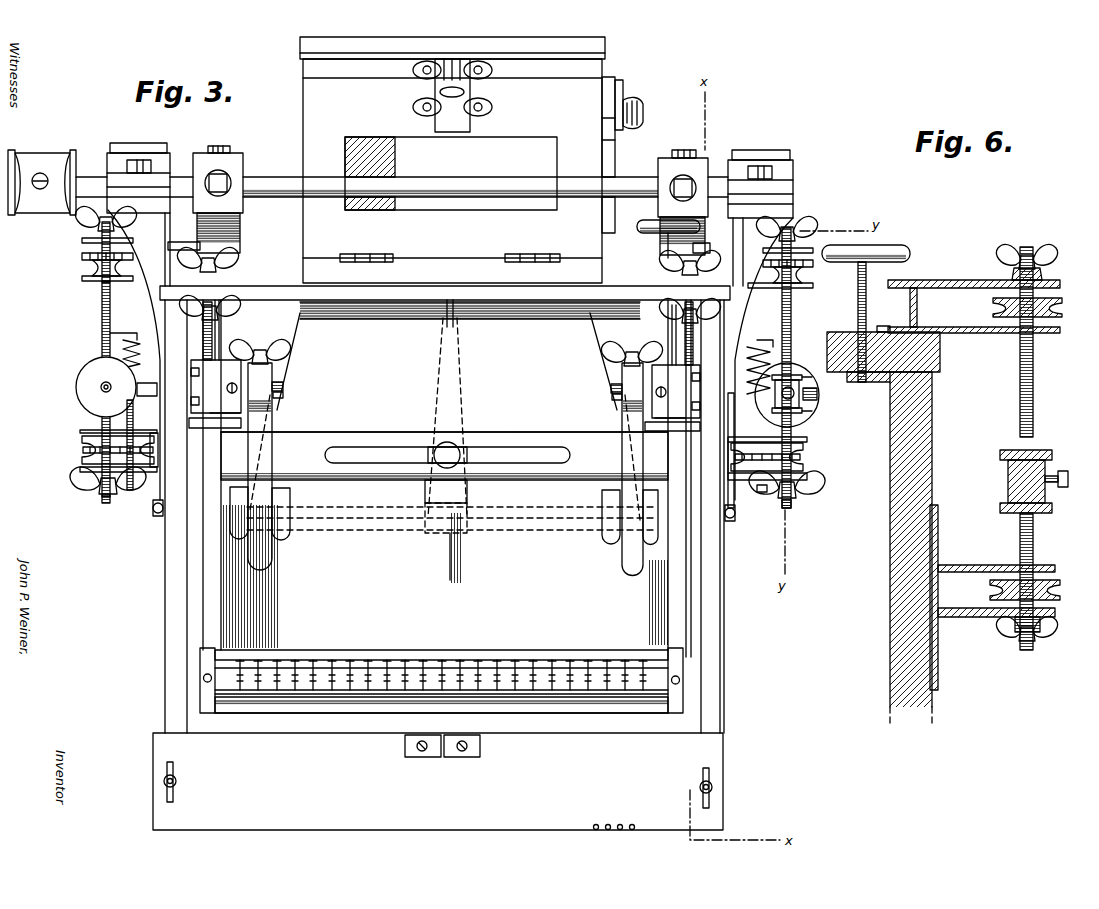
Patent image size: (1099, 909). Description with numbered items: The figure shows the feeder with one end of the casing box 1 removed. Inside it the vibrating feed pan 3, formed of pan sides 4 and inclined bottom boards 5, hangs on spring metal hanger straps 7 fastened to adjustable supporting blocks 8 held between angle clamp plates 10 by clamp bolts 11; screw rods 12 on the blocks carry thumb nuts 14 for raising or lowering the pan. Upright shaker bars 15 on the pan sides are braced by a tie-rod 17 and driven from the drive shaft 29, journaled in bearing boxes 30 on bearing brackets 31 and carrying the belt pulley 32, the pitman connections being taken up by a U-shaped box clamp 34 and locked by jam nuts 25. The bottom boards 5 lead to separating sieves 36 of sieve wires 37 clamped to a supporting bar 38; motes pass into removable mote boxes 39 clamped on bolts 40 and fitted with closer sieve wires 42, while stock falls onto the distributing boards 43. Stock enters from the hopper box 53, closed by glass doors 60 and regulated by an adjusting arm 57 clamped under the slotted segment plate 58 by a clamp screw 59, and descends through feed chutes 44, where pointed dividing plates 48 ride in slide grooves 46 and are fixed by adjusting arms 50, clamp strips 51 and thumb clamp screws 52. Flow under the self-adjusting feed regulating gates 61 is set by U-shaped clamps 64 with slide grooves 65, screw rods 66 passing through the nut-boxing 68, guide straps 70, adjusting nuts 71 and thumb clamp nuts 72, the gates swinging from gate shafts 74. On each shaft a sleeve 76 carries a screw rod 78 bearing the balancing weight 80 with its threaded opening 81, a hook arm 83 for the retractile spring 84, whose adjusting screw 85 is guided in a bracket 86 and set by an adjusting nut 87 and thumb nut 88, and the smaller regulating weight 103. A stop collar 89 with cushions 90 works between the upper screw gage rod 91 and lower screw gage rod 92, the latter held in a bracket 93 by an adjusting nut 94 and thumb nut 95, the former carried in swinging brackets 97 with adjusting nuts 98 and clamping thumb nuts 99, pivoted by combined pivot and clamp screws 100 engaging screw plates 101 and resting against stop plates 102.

In FIG. 3, the casing box 1 is at (186, 680).
In FIG. 3, the feed pan 3 is at (310, 696).
In FIG. 3, the pan sides 4 is at (207, 714).
In FIG. 3, the inclined bottom boards 5 is at (360, 652).
In FIG. 3, the spring metal hanger straps 7 is at (203, 620).
In FIG. 3, the adjustable supporting blocks 8 is at (212, 425).
In FIG. 3, the angle clamp plates 10 is at (196, 389).
In FIG. 3, the clamp bolts 11 is at (446, 409).
In FIG. 3, the screw rods 12 is at (203, 334).
In FIG. 3, the thumb nuts 14 is at (233, 262).
In FIG. 3, the upright shaker bars 15 is at (218, 339).
In FIG. 3, the transverse tie-rod 17 is at (297, 306).
In FIG. 3, the jam nuts 25 is at (224, 179).
In FIG. 3, the transverse drive shaft 29 is at (480, 197).
In FIG. 3, the bearing boxes 30 is at (118, 161).
In FIG. 3, the bearing brackets 31 is at (110, 214).
In FIG. 3, the belt wheel or pulley 32 is at (40, 161).
In FIG. 3, the U-shaped box clamp 34 is at (229, 150).
In FIG. 3, the inclined separating sieves 36 is at (409, 650).
In FIG. 3, the sieve wires 37 is at (285, 660).
In FIG. 3, the transverse supporting bar 38 is at (476, 698).
In FIG. 3, the mote boxes 39 is at (438, 781).
In FIG. 3, the bolts 40 is at (165, 781).
In FIG. 3, the sieve wires 42 is at (622, 824).
In FIG. 3, the distributing boards 43 is at (548, 714).
In FIG. 3, the feed boxes or chutes 44 is at (444, 398).
In FIG. 3, the slide grooves 46 is at (370, 520).
In FIG. 3, the dividing plates 48 is at (445, 370).
In FIG. 3, the adjusting arms 50 is at (470, 491).
In FIG. 3, the clamp strips 51 is at (573, 438).
In FIG. 3, the thumb clamp screws 52 is at (448, 466).
In FIG. 3, the hopper box 53 is at (316, 72).
In FIG. 3, the adjusting arm 57 is at (605, 157).
In FIG. 3, the slotted segment plate 58 is at (619, 91).
In FIG. 3, the clamp screw 59 is at (643, 113).
In FIG. 3, the glass doors 60 is at (452, 171).
In FIG. 3, the self-adjusting feed regulating gates 61 is at (445, 576).
In FIG. 3, the U-shaped clamps 64 is at (290, 490).
In FIG. 3, the slide grooves 65 is at (628, 541).
In FIG. 3, the screw rods 66 is at (262, 352).
In FIG. 3, the nut-boxing 68 is at (283, 386).
In FIG. 3, the guide straps 70 is at (272, 430).
In FIG. 3, the adjusting nuts 71 is at (283, 395).
In FIG. 3, the thumb clamp nuts 72 is at (290, 345).
In FIG. 3, the gate shafts 74 is at (238, 378).
In FIG. 3, the sleeves 76 is at (740, 395).
In FIG. 3, the screw rod 78 is at (100, 388).
In FIG. 6, the screw rod 78 is at (1030, 486).
In FIG. 3, the balancing weight 80 is at (88, 372).
In FIG. 3, the threaded opening 81 is at (101, 386).
In FIG. 3, the hook arm 83 is at (102, 325).
In FIG. 3, the retractile spring 84 is at (123, 348).
In FIG. 3, the adjusting screw 85 is at (150, 390).
In FIG. 3, the bracket 86 is at (157, 503).
In FIG. 3, the adjusting nut 87 is at (153, 460).
In FIG. 3, the thumb nut 88 is at (135, 486).
In FIG. 3, the stop collars 89 is at (808, 380).
In FIG. 6, the stop collars 89 is at (1052, 464).
In FIG. 3, the cushions or buffers 90 is at (790, 363).
In FIG. 3, the upper screw gage rods 91 is at (102, 292).
In FIG. 6, the upper screw gage rods 91 is at (1033, 368).
In FIG. 3, the lower screw gage rods 92 is at (104, 496).
In FIG. 6, the lower screw gage rods 92 is at (1033, 532).
In FIG. 3, the bracket 93 is at (732, 517).
In FIG. 6, the bracket 93 is at (940, 664).
In FIG. 3, the adjusting nut 94 is at (85, 446).
In FIG. 6, the adjusting nut 94 is at (1060, 588).
In FIG. 3, the thumb nut 95 is at (82, 486).
In FIG. 6, the thumb nut 95 is at (1060, 638).
In FIG. 3, the swinging brackets 97 is at (82, 240).
In FIG. 6, the swinging brackets 97 is at (1060, 284).
In FIG. 3, the adjusting nuts 98 is at (84, 264).
In FIG. 6, the adjusting nuts 98 is at (1062, 309).
In FIG. 3, the clamping thumb nuts 99 is at (113, 226).
In FIG. 6, the clamping thumb nuts 99 is at (1050, 258).
In FIG. 3, the combined pivot and clamp screws 100 is at (665, 241).
In FIG. 6, the combined pivot and clamp screws 100 is at (905, 247).
In FIG. 6, the screw plates 101 is at (882, 384).
In FIG. 6, the stop plates 102 is at (892, 322).
In FIG. 3, the smaller regulating weights 103 is at (796, 397).